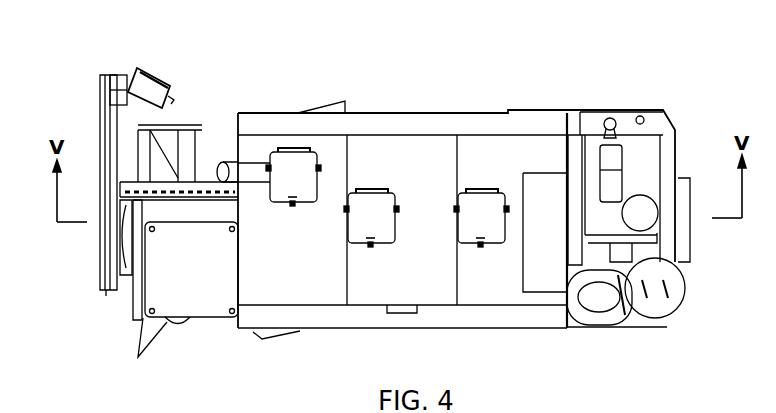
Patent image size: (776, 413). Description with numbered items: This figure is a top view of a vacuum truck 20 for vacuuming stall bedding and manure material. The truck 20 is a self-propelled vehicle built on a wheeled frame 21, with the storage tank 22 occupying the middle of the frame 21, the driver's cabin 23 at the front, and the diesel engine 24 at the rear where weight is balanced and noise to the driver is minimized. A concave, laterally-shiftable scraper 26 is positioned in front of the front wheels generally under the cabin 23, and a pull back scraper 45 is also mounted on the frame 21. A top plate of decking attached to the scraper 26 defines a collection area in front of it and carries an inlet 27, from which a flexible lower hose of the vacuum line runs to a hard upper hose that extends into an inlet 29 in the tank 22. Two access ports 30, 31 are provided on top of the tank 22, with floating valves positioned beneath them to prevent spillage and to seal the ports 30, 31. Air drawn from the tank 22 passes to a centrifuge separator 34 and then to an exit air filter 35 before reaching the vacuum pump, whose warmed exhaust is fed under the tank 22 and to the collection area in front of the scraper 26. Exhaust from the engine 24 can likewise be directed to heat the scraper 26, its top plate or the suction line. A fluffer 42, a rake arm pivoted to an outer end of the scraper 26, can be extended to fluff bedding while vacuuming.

The vacuum truck 20 is at (305, 63).
The frame 21 is at (462, 113).
The storage tank 22 is at (400, 130).
The driver's cabin 23 is at (213, 303).
The engine 24 is at (622, 114).
The scraper 26 is at (140, 343).
The inlet 27 is at (179, 222).
The tank inlet 29 is at (275, 204).
The access port 30 is at (356, 244).
The access port 31 is at (468, 244).
The centrifuge separator 34 is at (585, 330).
The exit air filter 35 is at (686, 286).
The fluffer 42 is at (165, 84).
The pull back scraper 45 is at (107, 296).